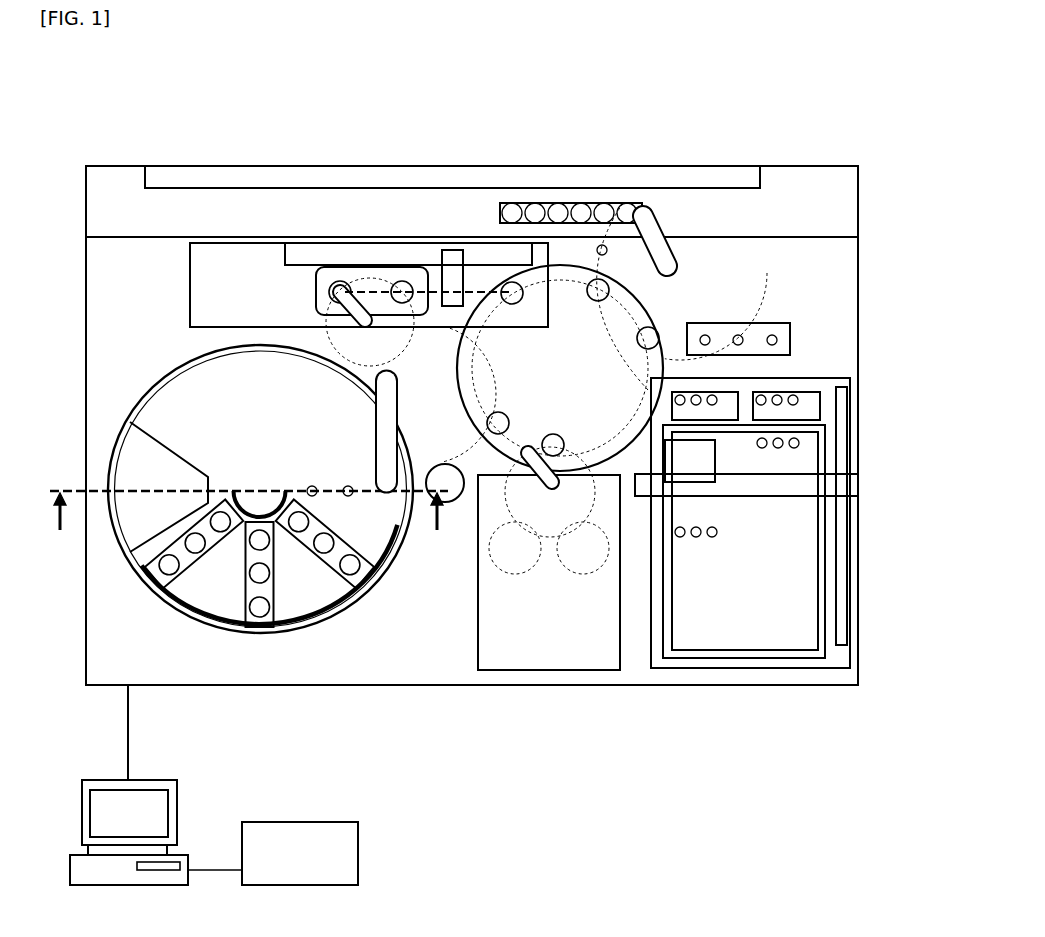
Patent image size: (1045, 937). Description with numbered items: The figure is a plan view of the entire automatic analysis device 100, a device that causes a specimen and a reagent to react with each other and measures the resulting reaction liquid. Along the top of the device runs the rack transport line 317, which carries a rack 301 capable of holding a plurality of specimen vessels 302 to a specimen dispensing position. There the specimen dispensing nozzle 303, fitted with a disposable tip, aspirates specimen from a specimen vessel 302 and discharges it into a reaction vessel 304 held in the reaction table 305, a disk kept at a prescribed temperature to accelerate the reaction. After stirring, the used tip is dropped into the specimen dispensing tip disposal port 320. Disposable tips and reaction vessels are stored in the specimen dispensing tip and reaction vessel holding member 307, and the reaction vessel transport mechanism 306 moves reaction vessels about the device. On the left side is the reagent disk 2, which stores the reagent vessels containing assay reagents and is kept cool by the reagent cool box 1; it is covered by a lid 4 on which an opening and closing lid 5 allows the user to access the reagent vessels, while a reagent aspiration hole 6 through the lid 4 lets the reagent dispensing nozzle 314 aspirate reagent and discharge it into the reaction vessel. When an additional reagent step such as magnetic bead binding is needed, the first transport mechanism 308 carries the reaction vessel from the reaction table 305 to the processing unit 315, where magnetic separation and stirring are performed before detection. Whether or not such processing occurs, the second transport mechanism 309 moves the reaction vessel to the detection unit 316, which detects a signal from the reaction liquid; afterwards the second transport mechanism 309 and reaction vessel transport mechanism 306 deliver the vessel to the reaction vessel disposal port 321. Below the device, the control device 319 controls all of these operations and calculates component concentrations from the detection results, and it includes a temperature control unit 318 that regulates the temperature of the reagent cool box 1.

The automatic analysis device 100 is at (605, 115).
The reagent cool box 1 is at (125, 412).
The reagent disk 2 is at (230, 598).
The lid 4 is at (178, 388).
The opening and closing lid 5 is at (127, 470).
The reagent aspiration hole 6 is at (312, 497).
The rack 301 is at (546, 196).
The specimen vessel 302 is at (503, 215).
The specimen dispensing nozzle 303 is at (648, 233).
The reaction vessel 304 is at (660, 333).
The reaction table 305 is at (553, 368).
The reaction vessel transport mechanism 306 is at (698, 473).
The specimen dispensing tip and reaction vessel holding member 307 is at (783, 587).
The first transport mechanism 308 is at (447, 255).
The second transport mechanism 309 is at (548, 482).
The reagent dispensing nozzle 314 is at (342, 470).
The processing unit 315 is at (238, 260).
The detection unit 316 is at (593, 600).
The rack transport line 317 is at (304, 210).
The temperature control unit 318 is at (358, 843).
The control device 319 is at (93, 873).
The specimen dispensing tip disposal port 320 is at (603, 245).
The reaction vessel disposal port 321 is at (776, 340).